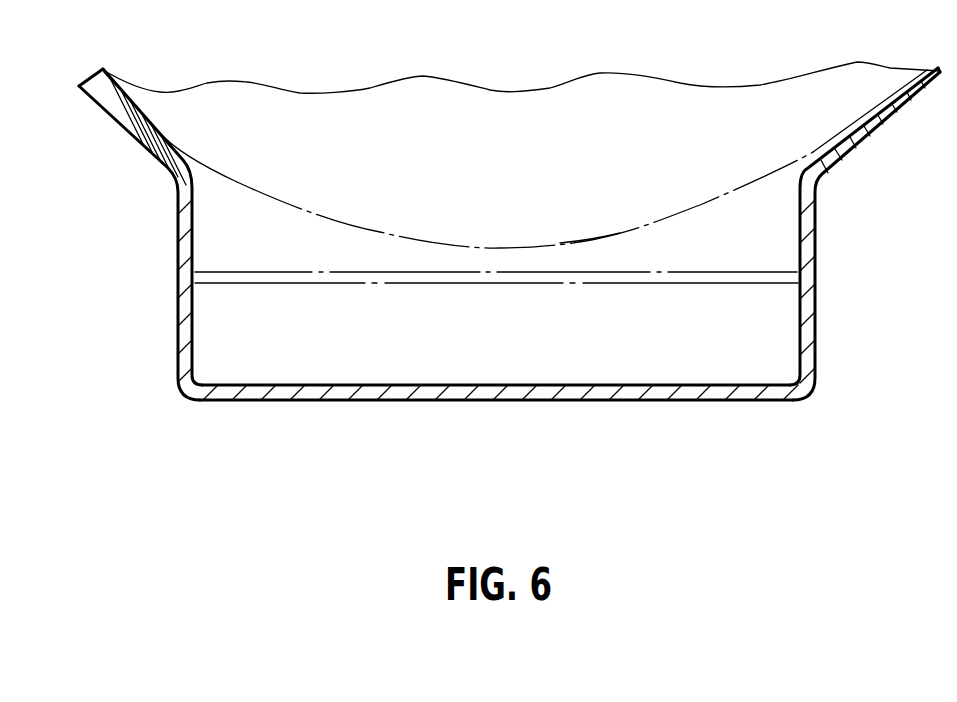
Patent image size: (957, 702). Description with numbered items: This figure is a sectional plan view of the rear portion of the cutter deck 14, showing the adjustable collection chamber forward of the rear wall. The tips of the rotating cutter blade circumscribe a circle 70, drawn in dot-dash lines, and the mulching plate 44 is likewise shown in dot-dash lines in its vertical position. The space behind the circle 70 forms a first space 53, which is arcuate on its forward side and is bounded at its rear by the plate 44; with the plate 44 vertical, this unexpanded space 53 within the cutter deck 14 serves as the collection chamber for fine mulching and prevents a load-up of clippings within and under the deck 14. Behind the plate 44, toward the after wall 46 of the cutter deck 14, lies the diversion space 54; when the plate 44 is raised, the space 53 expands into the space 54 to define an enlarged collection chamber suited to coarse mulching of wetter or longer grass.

The cutter deck 14 is at (817, 248).
The mulching plate 44 is at (418, 285).
The after wall 46 is at (480, 402).
The first space 53 is at (259, 234).
The diversion space 54 is at (340, 363).
The circle 70 is at (602, 233).